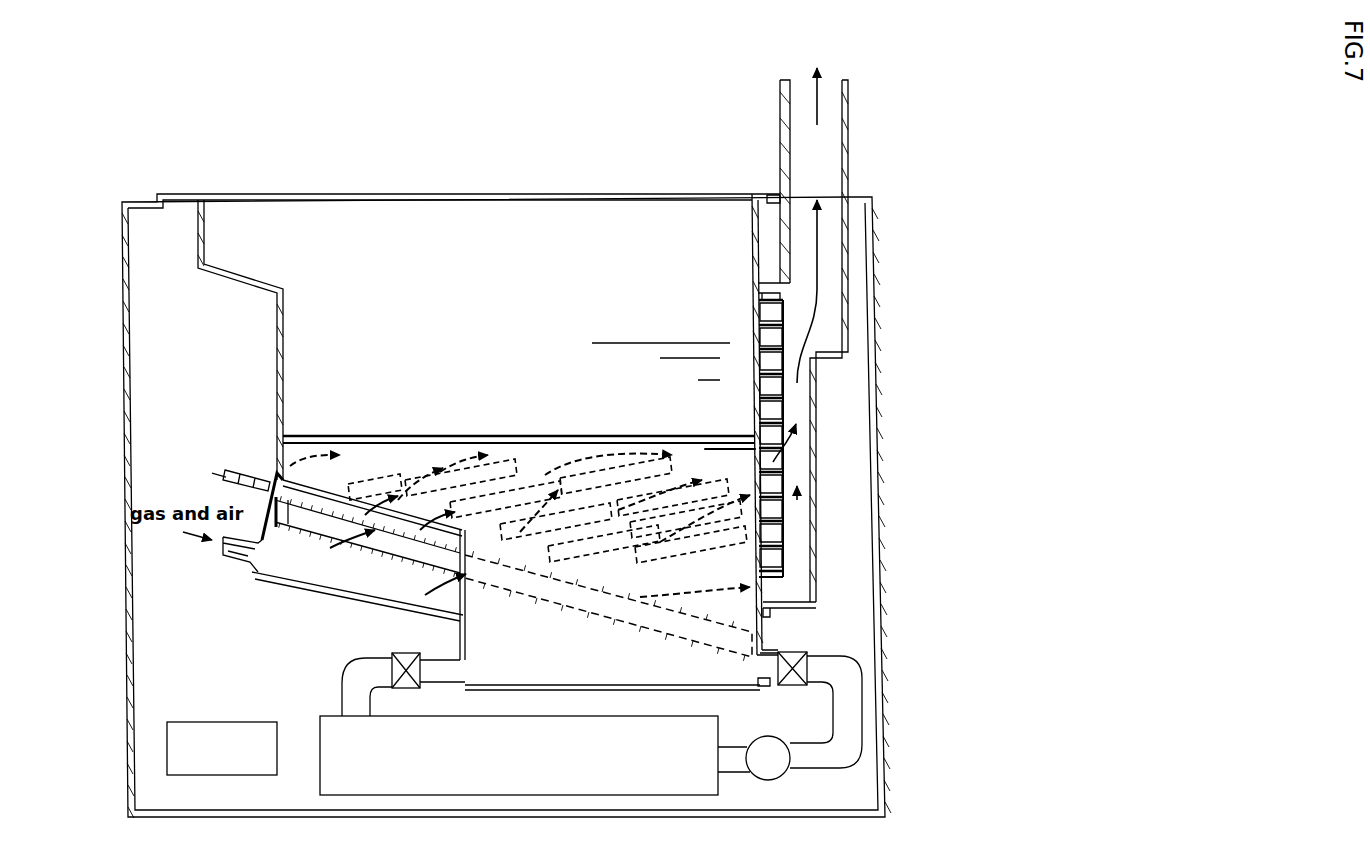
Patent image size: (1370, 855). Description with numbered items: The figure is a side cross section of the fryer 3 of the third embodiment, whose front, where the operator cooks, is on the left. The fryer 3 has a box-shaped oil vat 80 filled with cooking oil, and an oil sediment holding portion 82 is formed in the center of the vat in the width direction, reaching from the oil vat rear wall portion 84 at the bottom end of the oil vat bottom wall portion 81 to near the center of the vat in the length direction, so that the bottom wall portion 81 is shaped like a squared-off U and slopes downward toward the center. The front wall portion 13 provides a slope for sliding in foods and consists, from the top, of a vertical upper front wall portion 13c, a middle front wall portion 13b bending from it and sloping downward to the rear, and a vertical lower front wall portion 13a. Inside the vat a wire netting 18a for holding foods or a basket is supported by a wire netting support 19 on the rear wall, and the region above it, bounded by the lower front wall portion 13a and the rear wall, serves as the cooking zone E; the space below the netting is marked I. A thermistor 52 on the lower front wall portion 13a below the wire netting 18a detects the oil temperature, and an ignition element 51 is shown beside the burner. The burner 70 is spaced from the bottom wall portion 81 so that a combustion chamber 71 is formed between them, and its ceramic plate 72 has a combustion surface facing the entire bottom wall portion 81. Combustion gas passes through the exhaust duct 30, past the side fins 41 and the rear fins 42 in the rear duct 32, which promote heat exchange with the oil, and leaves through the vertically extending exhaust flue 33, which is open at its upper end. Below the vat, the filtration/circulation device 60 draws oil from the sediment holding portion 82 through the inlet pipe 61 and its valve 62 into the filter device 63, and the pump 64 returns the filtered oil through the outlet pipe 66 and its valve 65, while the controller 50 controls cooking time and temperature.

The fryer 3 is at (494, 180).
The front wall portion 13 is at (262, 328).
The lower front wall portion 13a is at (272, 357).
The middle front wall portion 13b is at (250, 284).
The upper front wall portion 13c is at (193, 262).
The wire netting 18a is at (620, 432).
The wire netting support 19 is at (706, 452).
The exhaust duct 30 is at (826, 388).
The rear duct 32 is at (817, 497).
The exhaust flue 33 is at (848, 134).
The side fins 41 is at (505, 465).
The rear fins 42 is at (778, 541).
The controller 50 is at (203, 720).
The igniter 51 is at (232, 472).
The thermistor 52 is at (290, 436).
The filtration/circulation device 60 is at (310, 720).
The inlet pipe 61 is at (440, 656).
The valve 62 is at (405, 690).
The filter device 63 is at (690, 706).
The pump 64 is at (785, 780).
The valve 65 is at (797, 690).
The outlet pipe 66 is at (768, 688).
The burner 70 is at (262, 584).
The combustion chamber 71 is at (432, 552).
The ceramic plate 72 is at (400, 532).
The oil vat 80 is at (198, 218).
The oil vat bottom wall portion 81 is at (335, 527).
The oil sediment holding portion 82 is at (768, 628).
The oil vat rear wall portion 84 is at (764, 238).
The cooking zone E is at (512, 393).
The inner chamber I is at (570, 675).